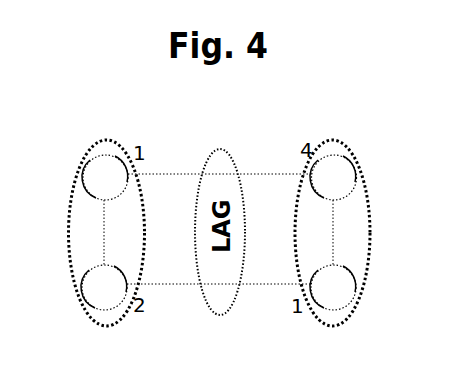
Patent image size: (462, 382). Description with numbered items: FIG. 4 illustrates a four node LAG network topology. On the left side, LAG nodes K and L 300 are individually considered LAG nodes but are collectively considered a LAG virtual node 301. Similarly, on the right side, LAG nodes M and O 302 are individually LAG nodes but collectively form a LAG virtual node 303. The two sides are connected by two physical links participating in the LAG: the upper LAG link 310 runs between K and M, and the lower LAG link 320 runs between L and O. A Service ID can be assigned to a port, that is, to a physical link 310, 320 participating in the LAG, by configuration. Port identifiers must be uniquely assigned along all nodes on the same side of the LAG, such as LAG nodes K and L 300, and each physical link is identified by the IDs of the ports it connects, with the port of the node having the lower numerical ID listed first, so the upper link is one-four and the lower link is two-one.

The LAG node 300 is at (80, 232).
The LAG virtual node 301 is at (107, 219).
The LAG node 302 is at (361, 232).
The LAG virtual node 303 is at (332, 220).
The LAG link 310 is at (220, 165).
The LAG link 320 is at (219, 274).